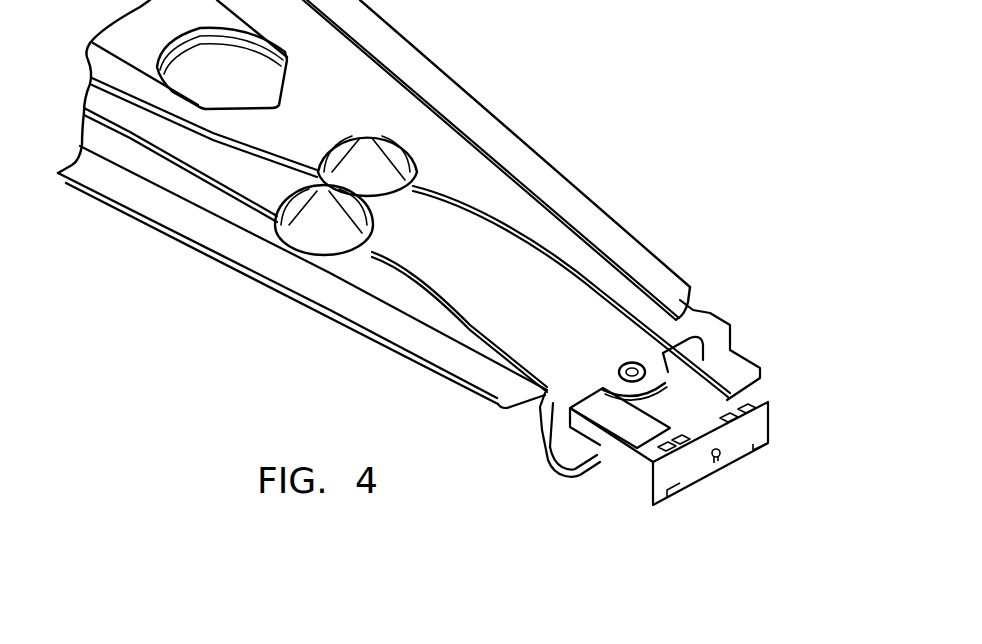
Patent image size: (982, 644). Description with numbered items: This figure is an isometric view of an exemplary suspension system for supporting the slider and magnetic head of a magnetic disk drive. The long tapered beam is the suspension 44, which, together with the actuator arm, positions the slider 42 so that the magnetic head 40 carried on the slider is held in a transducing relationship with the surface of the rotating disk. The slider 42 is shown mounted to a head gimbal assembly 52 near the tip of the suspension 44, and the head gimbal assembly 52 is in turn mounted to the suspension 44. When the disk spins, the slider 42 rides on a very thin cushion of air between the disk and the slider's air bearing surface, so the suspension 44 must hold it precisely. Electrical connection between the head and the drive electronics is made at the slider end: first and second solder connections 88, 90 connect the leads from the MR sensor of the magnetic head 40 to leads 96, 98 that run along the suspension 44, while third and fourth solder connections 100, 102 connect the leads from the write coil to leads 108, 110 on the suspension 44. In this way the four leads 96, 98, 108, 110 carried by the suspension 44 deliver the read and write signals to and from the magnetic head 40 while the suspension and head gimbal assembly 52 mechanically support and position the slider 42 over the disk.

The magnetic head 40 is at (720, 470).
The slider 42 is at (605, 486).
The suspension 44 is at (538, 140).
The head gimbal assembly 52 is at (667, 403).
The first solder connection 88 is at (653, 463).
The second solder connection 90 is at (758, 385).
The lead 96 is at (407, 282).
The lead 98 is at (607, 260).
The third solder connection 100 is at (688, 452).
The fourth solder connection 102 is at (762, 418).
The lead 108 is at (427, 282).
The lead 110 is at (500, 224).